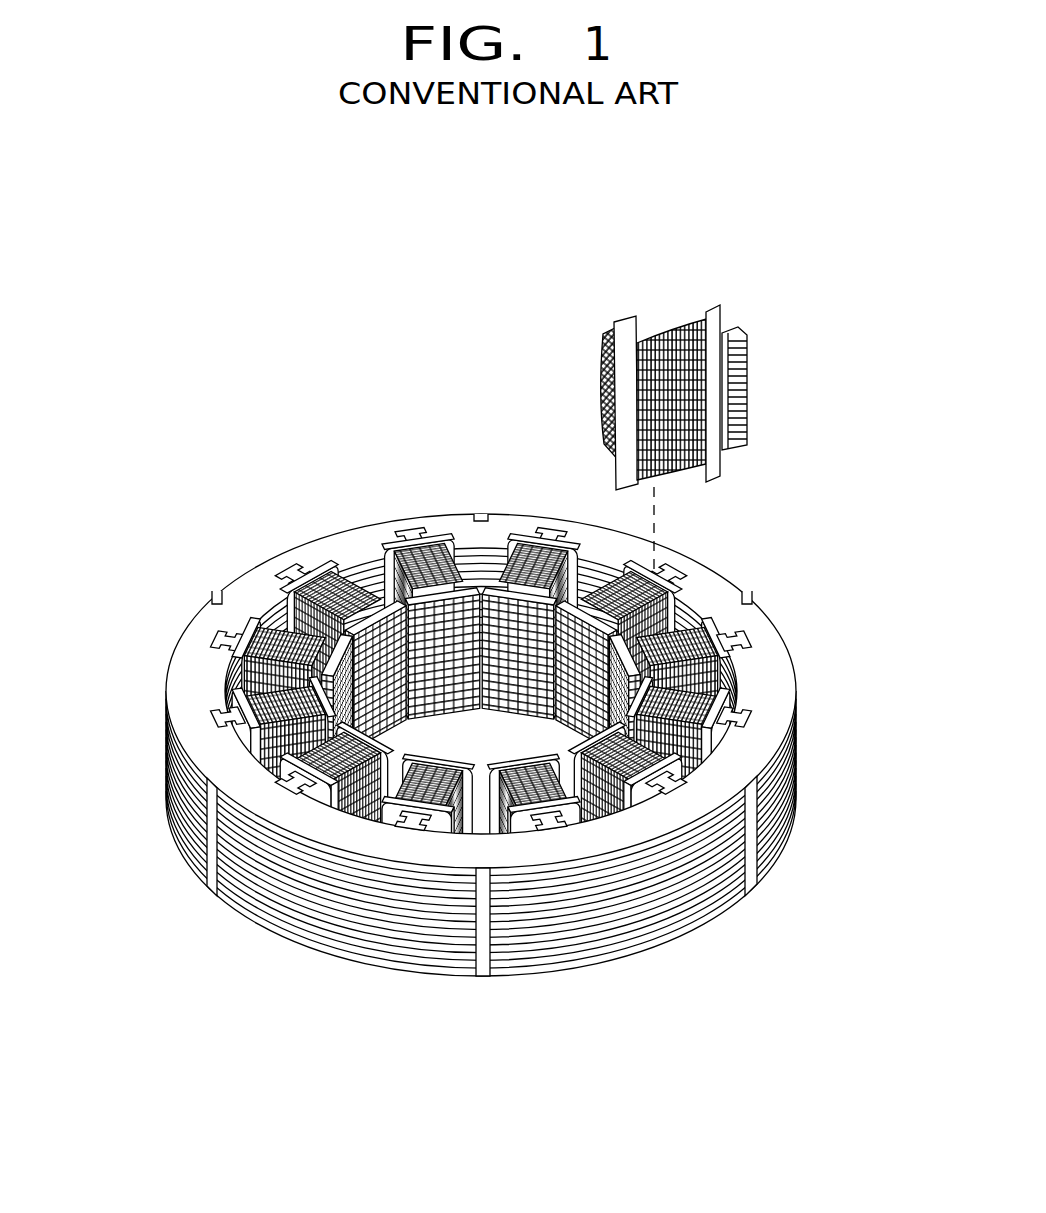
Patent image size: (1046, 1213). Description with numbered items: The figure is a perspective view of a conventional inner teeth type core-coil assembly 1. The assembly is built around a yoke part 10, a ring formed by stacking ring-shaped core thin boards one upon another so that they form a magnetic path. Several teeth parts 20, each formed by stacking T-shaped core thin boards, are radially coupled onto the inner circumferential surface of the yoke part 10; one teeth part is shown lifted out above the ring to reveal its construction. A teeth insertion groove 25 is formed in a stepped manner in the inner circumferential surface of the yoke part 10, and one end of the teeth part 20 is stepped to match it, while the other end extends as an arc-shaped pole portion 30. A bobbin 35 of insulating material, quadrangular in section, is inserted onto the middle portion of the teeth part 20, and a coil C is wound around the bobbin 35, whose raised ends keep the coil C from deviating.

The inner teeth type core-coil assembly 1 is at (486, 798).
The yoke part 10 is at (187, 660).
The teeth part 20 is at (743, 333).
The teeth insertion groove 25 is at (738, 648).
The pole portion 30 is at (602, 375).
The bobbin 35 is at (722, 463).
The coil C is at (656, 330).